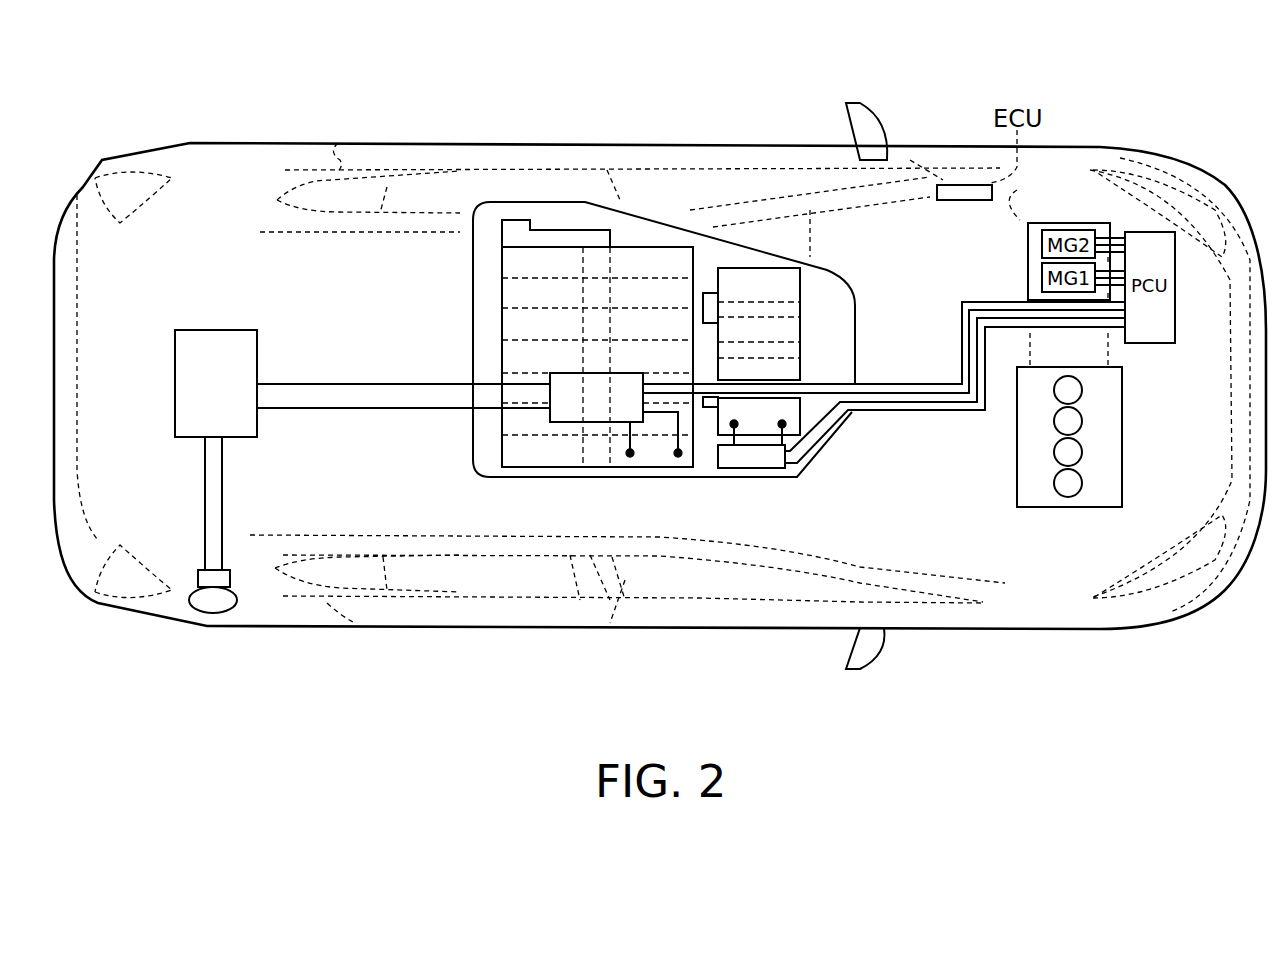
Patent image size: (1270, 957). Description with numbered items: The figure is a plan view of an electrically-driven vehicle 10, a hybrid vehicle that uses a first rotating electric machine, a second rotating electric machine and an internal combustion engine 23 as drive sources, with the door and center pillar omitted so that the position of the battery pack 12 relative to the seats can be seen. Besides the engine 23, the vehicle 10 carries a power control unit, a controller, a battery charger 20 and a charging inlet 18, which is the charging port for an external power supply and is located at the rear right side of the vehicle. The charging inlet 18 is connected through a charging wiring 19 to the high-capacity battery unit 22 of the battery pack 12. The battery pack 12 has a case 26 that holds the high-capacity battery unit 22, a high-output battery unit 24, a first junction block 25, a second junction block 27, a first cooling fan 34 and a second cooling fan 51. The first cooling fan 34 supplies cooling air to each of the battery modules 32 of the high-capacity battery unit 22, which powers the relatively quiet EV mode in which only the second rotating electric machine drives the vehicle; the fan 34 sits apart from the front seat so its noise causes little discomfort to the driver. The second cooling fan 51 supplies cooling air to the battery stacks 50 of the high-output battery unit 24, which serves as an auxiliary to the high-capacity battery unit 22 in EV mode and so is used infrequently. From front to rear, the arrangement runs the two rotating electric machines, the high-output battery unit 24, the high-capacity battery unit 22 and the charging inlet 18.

The electrically-driven vehicle 10 is at (508, 95).
The battery pack 12 is at (472, 481).
The charging inlet 18 is at (213, 602).
The charging wiring 19 is at (328, 413).
The battery charger 20 is at (197, 392).
The high-capacity battery unit 22 is at (595, 458).
The internal combustion engine 23 is at (1107, 450).
The high-output battery unit 24 is at (793, 350).
The first junction block 25 is at (597, 407).
The case 26 is at (473, 333).
The second junction block 27 is at (753, 463).
The battery modules 32 is at (503, 357).
The first cooling fan 34 is at (513, 236).
The battery stacks 50 is at (785, 286).
The second cooling fan 51 is at (705, 293).